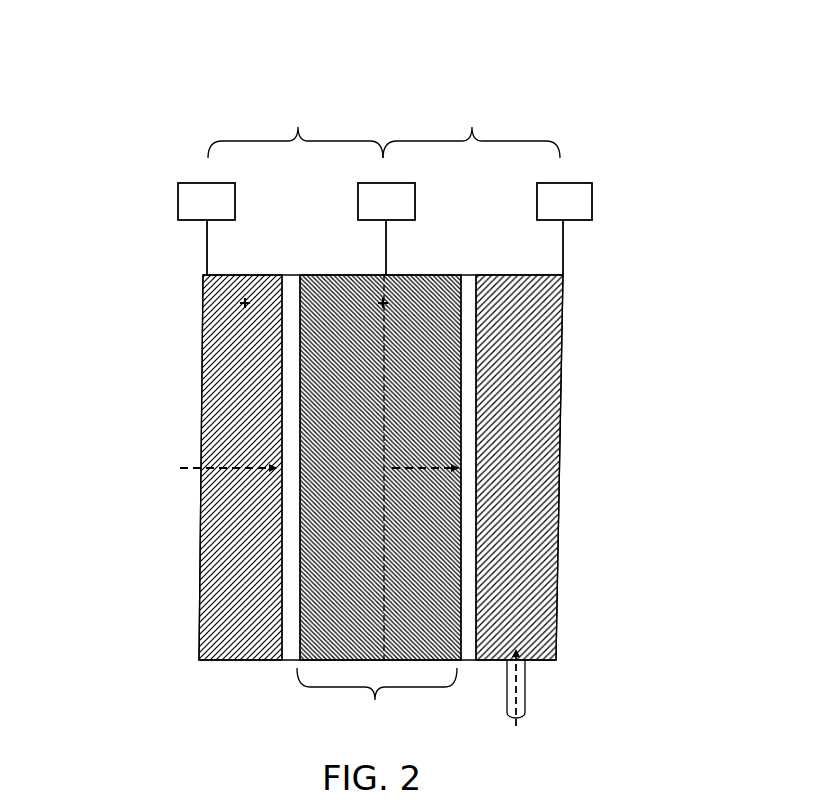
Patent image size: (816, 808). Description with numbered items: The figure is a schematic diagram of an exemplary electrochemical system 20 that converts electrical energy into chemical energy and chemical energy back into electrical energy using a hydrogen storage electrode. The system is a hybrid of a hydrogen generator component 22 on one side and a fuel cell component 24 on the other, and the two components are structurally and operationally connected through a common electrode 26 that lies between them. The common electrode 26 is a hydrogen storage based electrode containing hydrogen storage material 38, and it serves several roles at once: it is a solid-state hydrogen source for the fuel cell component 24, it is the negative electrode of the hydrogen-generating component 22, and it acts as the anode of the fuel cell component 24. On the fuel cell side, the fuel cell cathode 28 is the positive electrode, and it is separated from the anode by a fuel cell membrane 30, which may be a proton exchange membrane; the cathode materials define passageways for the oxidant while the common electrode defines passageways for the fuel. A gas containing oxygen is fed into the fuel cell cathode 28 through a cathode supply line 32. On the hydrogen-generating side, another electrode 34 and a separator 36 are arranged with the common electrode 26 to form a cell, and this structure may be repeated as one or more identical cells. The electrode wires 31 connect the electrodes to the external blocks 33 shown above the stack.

The electrochemical system 20 is at (110, 136).
The hydrogen generator component 22 is at (282, 379).
The fuel cell component 24 is at (469, 283).
The common electrode 26 is at (308, 407).
The fuel cell cathode 28 is at (549, 414).
The fuel cell membrane 30 is at (468, 553).
The electrical lead 31 is at (207, 252).
The cathode supply line 32 is at (527, 690).
The power source 33 is at (220, 213).
The another electrode 34 is at (207, 590).
The separator 36 is at (287, 552).
The hydrogen storage material 38 is at (377, 701).